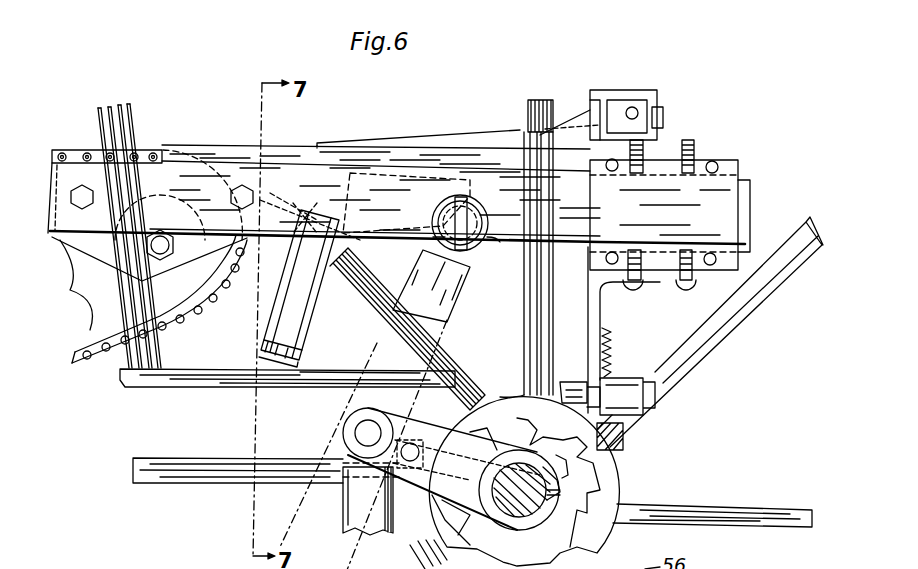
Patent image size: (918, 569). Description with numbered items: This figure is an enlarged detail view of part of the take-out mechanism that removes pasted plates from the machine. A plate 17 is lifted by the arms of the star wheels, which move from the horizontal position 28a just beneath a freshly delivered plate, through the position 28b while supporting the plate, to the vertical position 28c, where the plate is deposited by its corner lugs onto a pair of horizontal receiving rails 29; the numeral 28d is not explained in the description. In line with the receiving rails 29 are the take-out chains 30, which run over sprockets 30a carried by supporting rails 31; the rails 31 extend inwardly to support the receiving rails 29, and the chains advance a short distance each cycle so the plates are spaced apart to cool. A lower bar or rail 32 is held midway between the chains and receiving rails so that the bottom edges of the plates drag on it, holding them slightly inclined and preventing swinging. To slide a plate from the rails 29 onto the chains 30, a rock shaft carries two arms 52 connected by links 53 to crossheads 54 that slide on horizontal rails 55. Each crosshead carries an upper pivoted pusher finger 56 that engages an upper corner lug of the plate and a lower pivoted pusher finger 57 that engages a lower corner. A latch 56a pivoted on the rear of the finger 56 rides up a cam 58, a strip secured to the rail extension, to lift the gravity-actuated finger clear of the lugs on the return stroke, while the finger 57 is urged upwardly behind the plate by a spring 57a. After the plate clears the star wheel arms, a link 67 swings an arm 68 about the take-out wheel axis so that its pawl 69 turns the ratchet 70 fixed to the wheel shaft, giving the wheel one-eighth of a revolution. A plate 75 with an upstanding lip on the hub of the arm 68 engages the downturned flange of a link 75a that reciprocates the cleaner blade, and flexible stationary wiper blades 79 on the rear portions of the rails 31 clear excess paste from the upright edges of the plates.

The plate 17 is at (137, 125).
The horizontal position of star wheel arms 28a is at (733, 508).
The intermediate position of star wheel arms 28b is at (745, 320).
The vertical position of star wheel arms 28c is at (533, 100).
The shaft hub 28d is at (527, 517).
The receiving rails 29 is at (353, 153).
The take-out chains 30 is at (62, 153).
The sprockets 30a is at (159, 299).
The supporting rails 31 is at (150, 240).
The lower bar or rail 32 is at (213, 390).
The arms 52 is at (453, 313).
The links 53 is at (493, 243).
The crossheads 54 is at (730, 168).
The horizontal rails 55 is at (753, 210).
The upper pivoted pusher finger 56 is at (613, 97).
The latch 56a is at (650, 140).
The lower pivoted pusher finger 57 is at (595, 330).
The spring 57a is at (607, 347).
The cam 58 is at (438, 137).
The link 67 is at (382, 547).
The arm 68 is at (455, 395).
The pawl 69 is at (450, 512).
The ratchet 70 is at (597, 498).
The plate with upstanding lip 75 is at (615, 478).
The link 75a is at (613, 470).
The flexible stationary wiper blades 79 is at (287, 290).